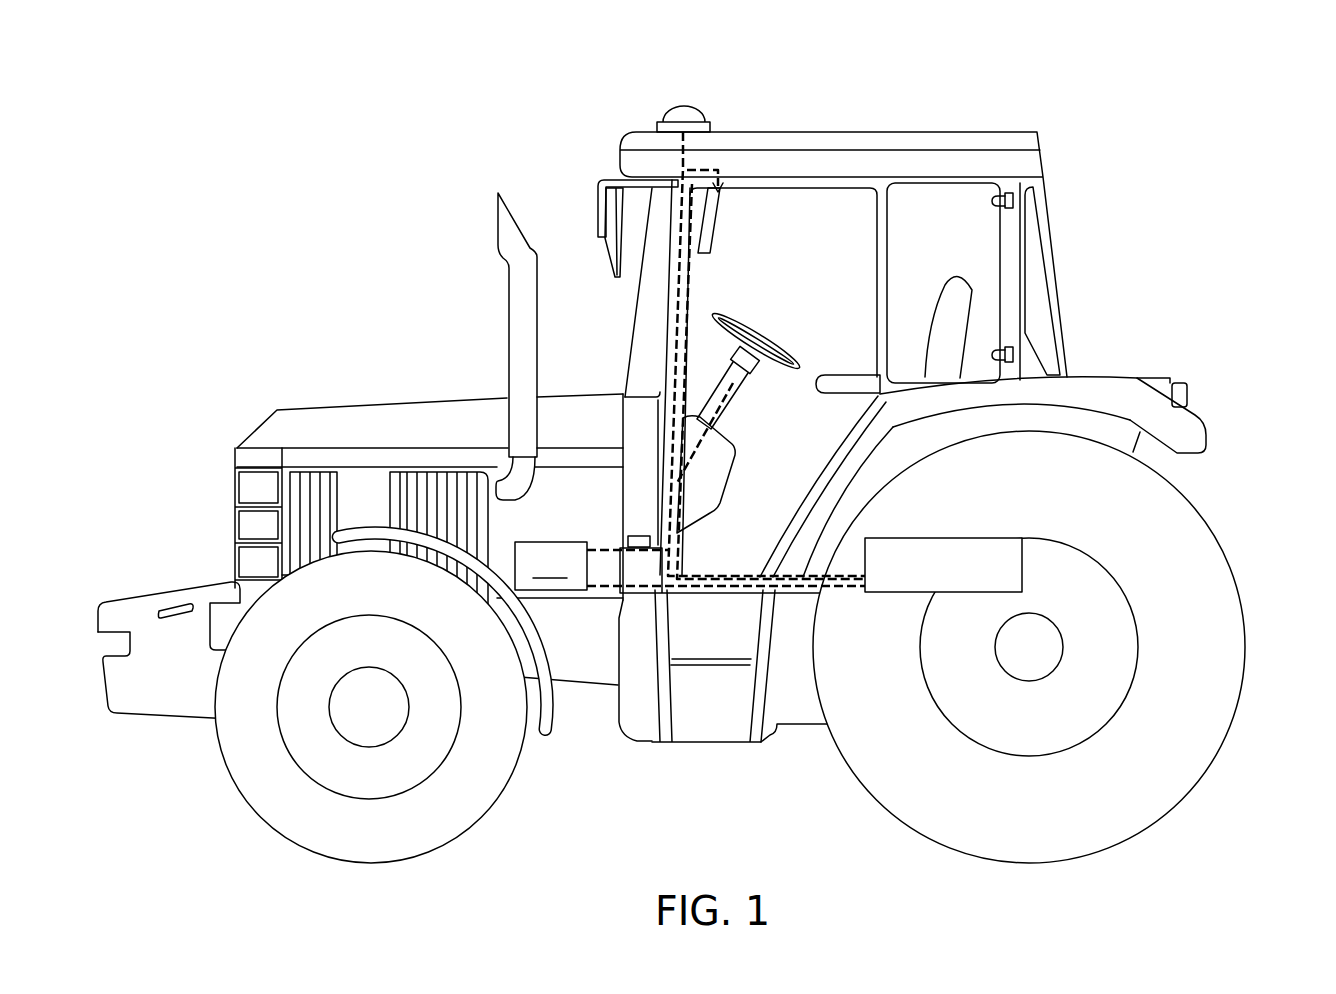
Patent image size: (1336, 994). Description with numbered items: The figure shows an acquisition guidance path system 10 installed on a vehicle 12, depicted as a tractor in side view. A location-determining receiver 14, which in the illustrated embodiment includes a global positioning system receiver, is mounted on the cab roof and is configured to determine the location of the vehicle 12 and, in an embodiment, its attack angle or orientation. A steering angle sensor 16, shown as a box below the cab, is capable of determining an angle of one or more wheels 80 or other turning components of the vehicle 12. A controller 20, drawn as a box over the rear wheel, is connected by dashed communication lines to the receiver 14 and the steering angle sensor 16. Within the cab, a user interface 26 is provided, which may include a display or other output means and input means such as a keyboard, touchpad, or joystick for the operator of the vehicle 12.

The acquisition guidance path system 10 is at (705, 469).
The vehicle 12 is at (1162, 74).
The location-determining receiver 14 is at (678, 113).
The steering angle sensor 16 is at (551, 566).
The controller 20 is at (1022, 555).
The user interface 26 is at (712, 230).
The wheel 80 is at (237, 791).